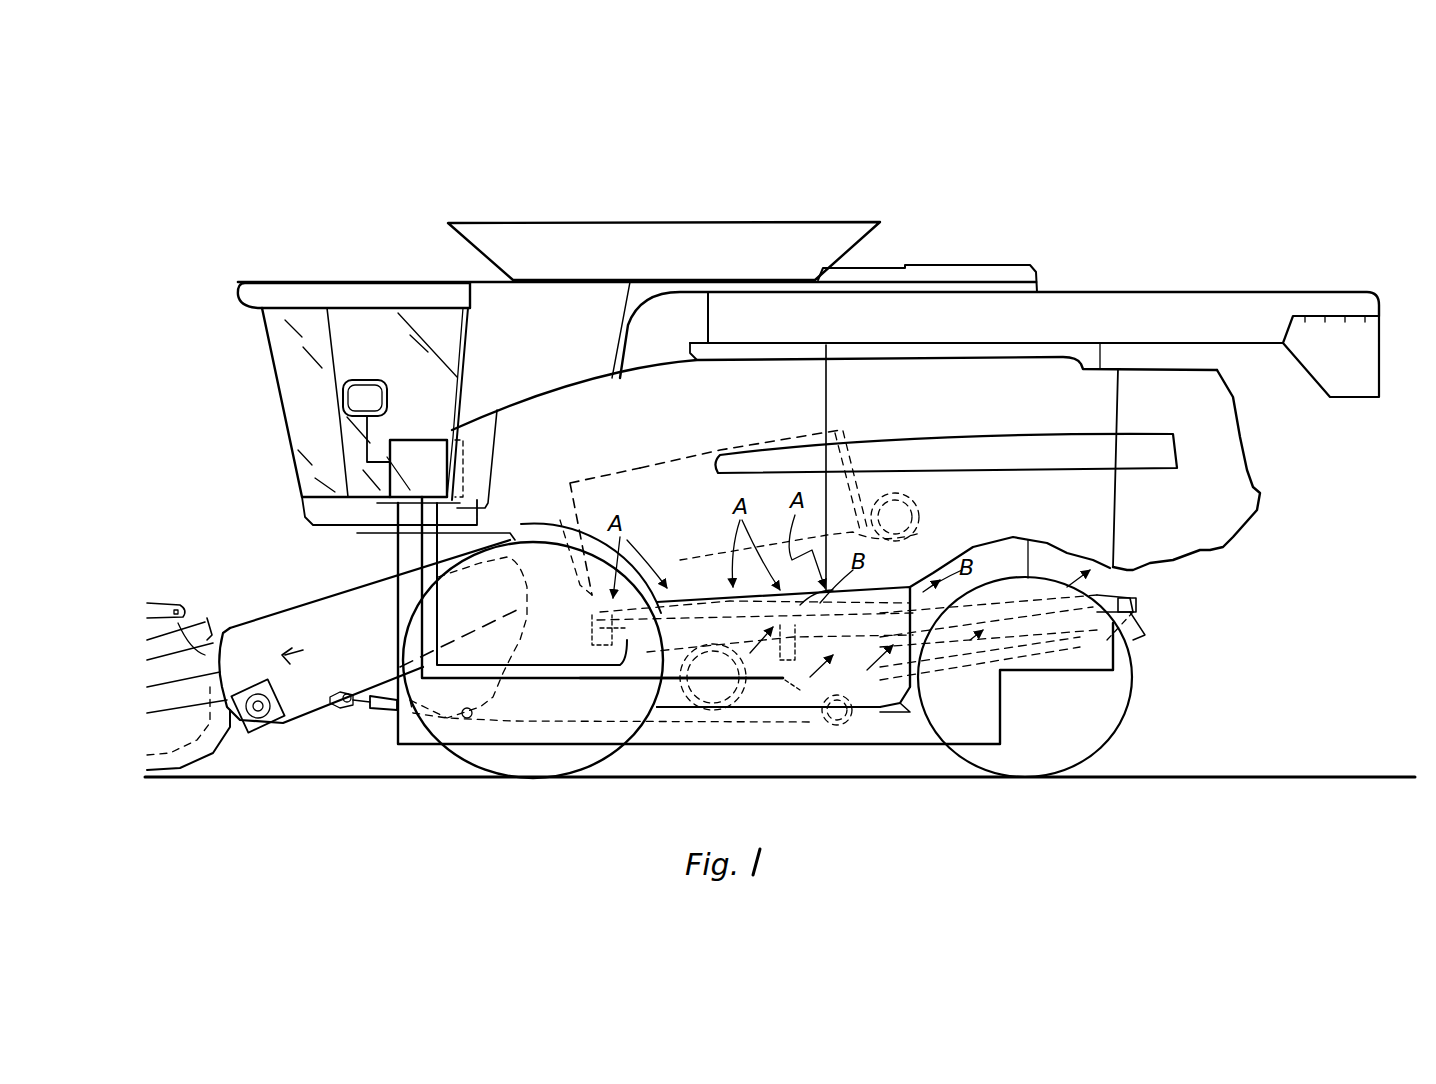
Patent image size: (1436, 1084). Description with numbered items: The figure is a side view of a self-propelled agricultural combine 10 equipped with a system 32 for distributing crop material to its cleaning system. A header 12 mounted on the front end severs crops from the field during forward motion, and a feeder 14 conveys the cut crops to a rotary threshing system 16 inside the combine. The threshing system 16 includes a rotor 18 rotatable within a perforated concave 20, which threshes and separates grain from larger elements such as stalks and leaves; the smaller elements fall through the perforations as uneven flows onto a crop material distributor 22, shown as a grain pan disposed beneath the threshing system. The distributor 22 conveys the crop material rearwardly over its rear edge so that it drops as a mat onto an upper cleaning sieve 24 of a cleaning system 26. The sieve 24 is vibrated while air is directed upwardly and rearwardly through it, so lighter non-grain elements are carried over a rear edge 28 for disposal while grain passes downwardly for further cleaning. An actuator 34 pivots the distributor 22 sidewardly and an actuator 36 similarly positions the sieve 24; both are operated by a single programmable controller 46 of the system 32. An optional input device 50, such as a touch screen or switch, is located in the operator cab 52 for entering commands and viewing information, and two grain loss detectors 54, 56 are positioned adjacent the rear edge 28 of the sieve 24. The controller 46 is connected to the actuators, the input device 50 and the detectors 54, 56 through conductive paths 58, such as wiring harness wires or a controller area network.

The agricultural combine 10 is at (1162, 196).
The header 12 is at (160, 598).
The feeder 14 is at (263, 620).
The rotary threshing system 16 is at (640, 462).
The rotor 18 is at (840, 433).
The perforated concave 20 is at (703, 457).
The crop material distributor 22 is at (690, 603).
The upper cleaning sieve 24 is at (893, 580).
The cleaning system 26 is at (992, 565).
The rear edge 28 is at (1107, 603).
The system 32 is at (354, 477).
The actuator 34 is at (623, 640).
The actuator 36 is at (793, 663).
The controller 46 is at (420, 437).
The input device 50 is at (367, 378).
The operator cab 52 is at (263, 357).
The grain loss detector 54 is at (1133, 605).
The grain loss detector 56 is at (1133, 605).
The conductive paths 58 is at (437, 562).